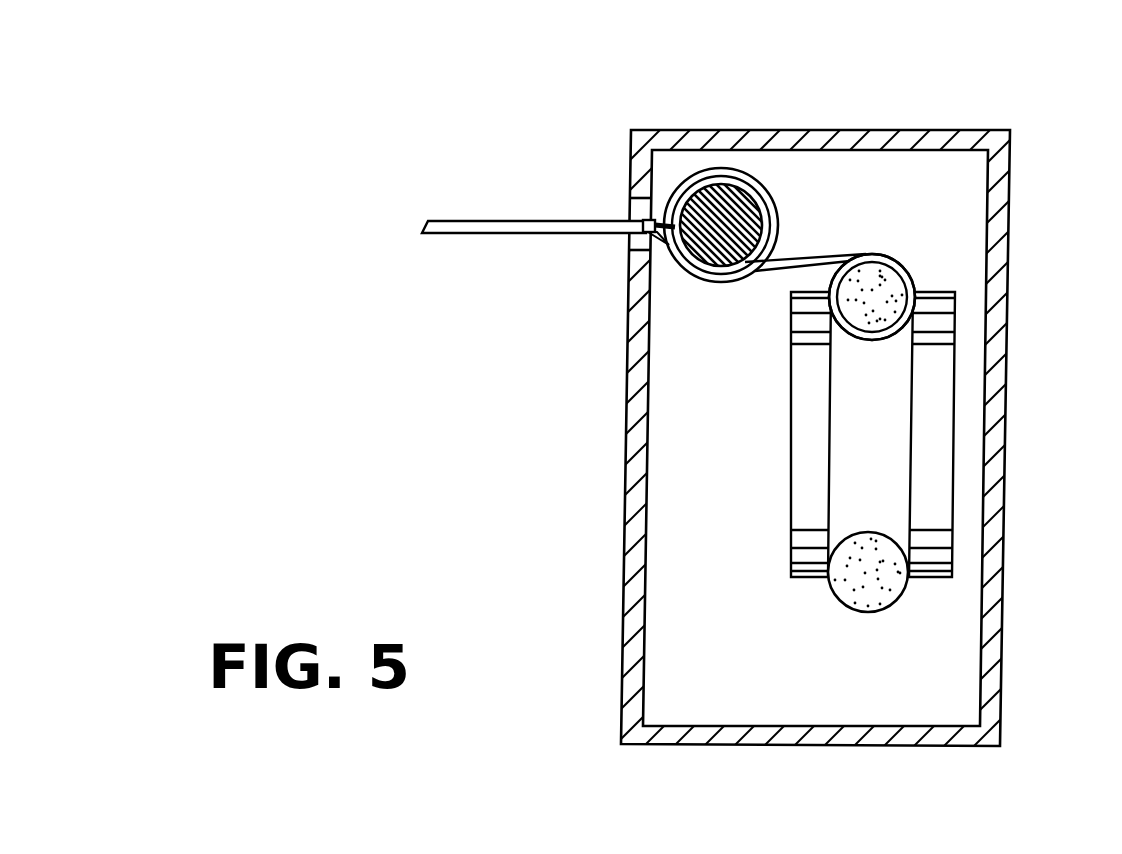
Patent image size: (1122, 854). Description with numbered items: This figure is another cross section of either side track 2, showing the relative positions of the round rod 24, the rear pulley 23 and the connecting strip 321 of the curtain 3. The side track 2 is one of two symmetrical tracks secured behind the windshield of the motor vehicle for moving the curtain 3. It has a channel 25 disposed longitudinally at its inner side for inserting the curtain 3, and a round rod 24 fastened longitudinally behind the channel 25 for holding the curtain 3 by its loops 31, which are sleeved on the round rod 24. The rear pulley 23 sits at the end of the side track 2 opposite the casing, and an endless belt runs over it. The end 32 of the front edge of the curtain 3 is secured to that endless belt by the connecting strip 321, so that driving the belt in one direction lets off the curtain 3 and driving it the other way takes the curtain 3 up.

The side track 2 is at (939, 118).
The curtain 3 is at (507, 222).
The rear pulley 23 is at (933, 458).
The round rod 24 is at (767, 229).
The channel 25 is at (630, 215).
The loop 31 is at (743, 166).
The end of the front edge of the curtain 32 is at (643, 234).
The connecting strip 321 is at (902, 263).